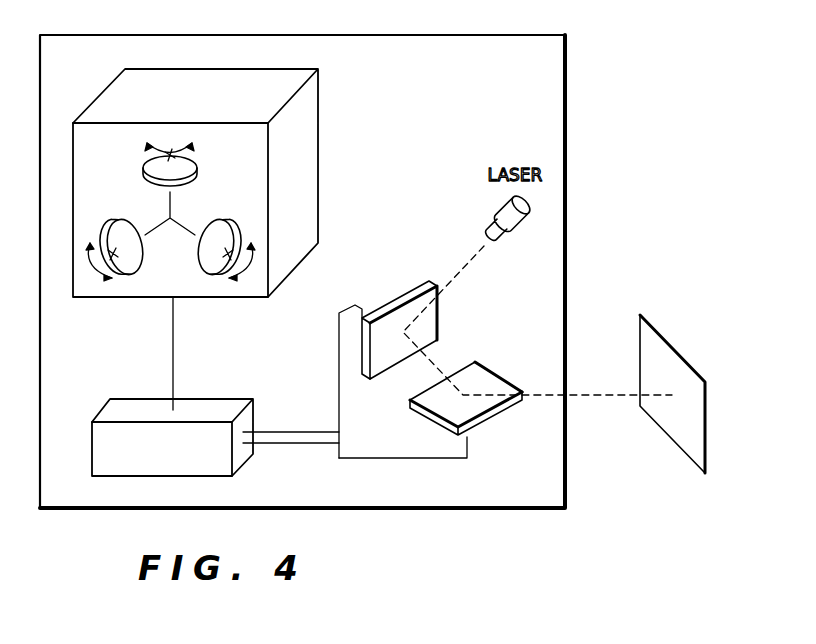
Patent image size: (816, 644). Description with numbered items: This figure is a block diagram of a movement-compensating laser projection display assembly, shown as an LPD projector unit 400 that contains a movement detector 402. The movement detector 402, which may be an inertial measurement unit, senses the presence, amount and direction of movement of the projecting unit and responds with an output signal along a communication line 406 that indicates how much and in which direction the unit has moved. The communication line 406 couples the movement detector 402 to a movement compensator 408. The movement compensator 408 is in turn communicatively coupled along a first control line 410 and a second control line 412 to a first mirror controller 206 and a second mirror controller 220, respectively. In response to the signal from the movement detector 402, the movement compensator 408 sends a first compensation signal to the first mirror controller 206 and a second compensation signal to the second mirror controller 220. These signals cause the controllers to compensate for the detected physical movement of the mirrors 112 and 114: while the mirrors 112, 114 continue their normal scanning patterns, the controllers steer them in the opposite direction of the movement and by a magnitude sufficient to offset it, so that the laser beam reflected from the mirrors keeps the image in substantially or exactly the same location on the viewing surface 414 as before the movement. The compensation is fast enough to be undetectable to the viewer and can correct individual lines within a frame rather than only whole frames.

The LPD projector unit 400 is at (585, 123).
The movement detector 402 is at (318, 166).
The communication line 406 is at (174, 337).
The movement compensator 408 is at (136, 403).
The control line 410 is at (339, 366).
The control line 412 is at (408, 460).
The first mirror controller 206 is at (422, 323).
The first mirror 112 is at (440, 327).
The second mirror 114 is at (474, 393).
The second mirror controller 220 is at (493, 413).
The viewing surface 414 is at (681, 348).